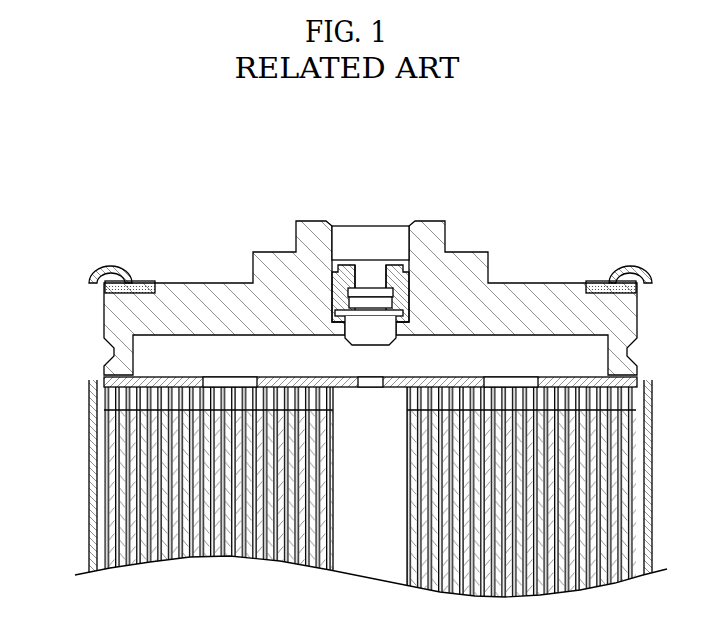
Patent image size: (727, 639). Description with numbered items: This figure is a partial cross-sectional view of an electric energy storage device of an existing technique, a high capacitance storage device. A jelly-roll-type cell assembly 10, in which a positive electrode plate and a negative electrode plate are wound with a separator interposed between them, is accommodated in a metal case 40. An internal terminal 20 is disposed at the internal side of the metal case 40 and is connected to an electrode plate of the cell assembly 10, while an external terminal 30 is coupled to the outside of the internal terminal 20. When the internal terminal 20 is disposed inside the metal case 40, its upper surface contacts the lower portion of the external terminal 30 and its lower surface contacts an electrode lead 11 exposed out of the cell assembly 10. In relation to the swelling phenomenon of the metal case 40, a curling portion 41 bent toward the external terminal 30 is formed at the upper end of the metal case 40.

The jelly-roll-type cell assembly 10 is at (110, 451).
The electrode lead 11 is at (120, 398).
The internal terminal 20 is at (130, 379).
The external terminal 30 is at (189, 249).
The metal case 40 is at (88, 498).
The curling portion 41 is at (102, 258).